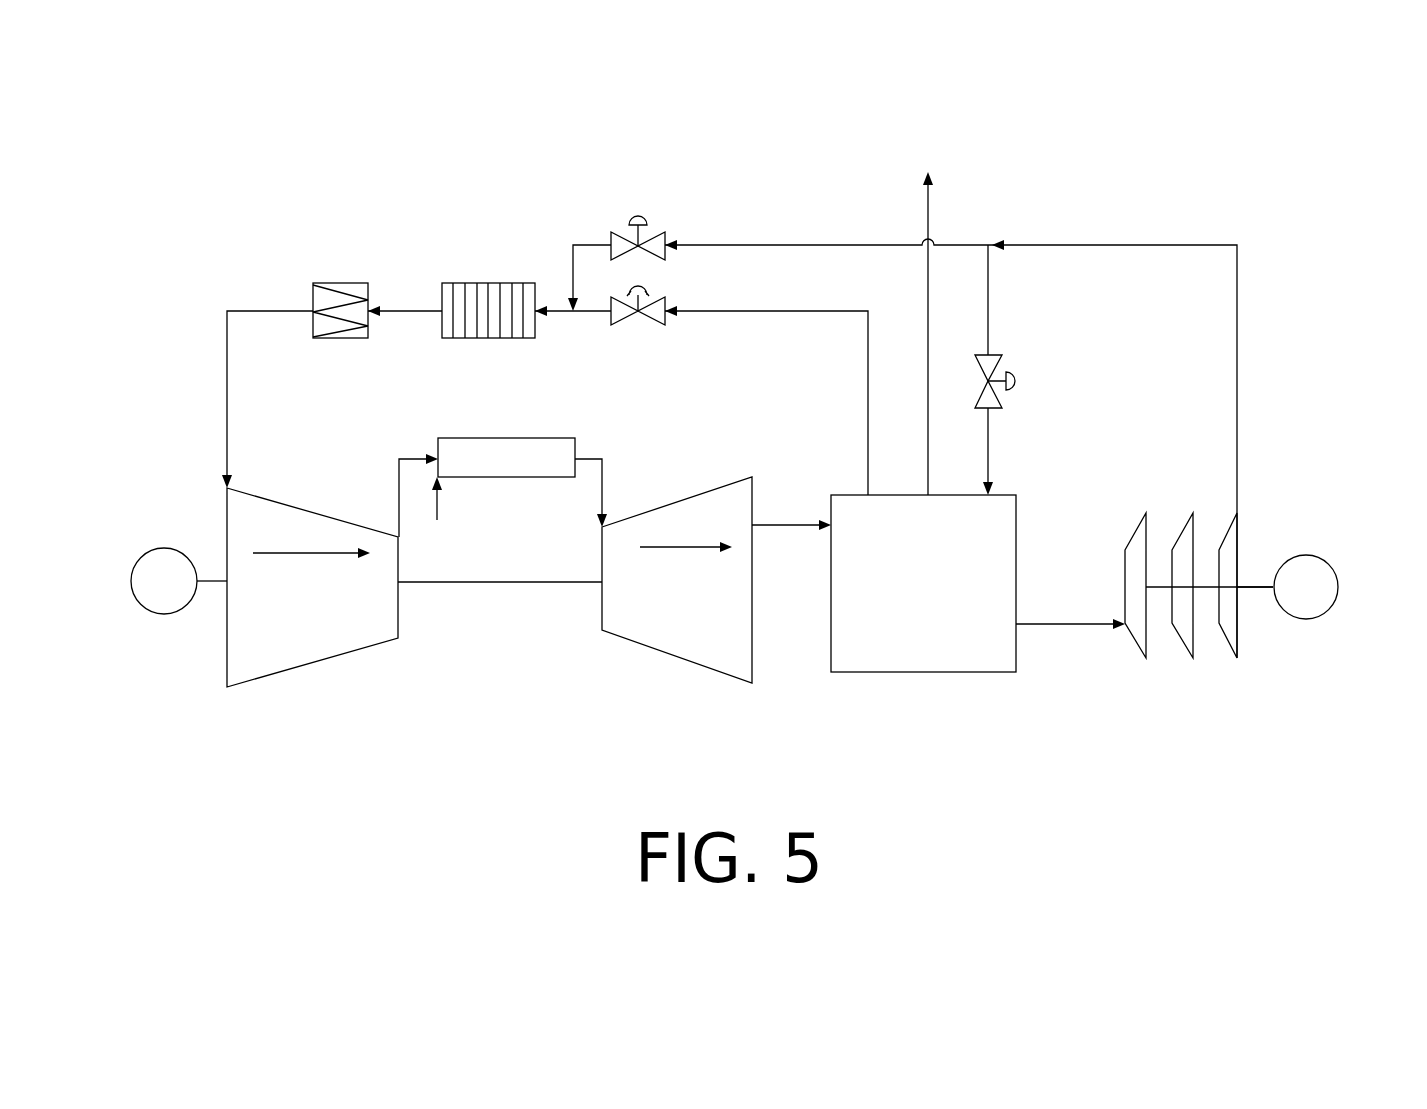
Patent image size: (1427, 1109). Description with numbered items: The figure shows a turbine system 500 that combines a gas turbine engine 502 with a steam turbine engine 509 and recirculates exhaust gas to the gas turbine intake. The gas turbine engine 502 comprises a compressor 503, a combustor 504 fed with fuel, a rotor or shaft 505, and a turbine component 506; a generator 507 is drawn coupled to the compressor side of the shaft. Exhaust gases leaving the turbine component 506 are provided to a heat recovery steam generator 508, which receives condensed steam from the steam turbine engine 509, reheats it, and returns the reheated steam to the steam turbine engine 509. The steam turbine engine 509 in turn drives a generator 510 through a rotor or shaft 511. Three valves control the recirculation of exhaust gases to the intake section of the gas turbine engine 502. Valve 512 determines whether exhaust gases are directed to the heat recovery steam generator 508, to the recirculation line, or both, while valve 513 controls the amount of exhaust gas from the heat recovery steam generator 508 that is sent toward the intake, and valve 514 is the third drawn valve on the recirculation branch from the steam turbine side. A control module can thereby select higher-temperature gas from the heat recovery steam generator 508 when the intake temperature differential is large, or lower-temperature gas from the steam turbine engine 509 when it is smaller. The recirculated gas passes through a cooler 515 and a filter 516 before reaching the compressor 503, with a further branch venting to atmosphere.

The turbine system 500 is at (252, 196).
The gas turbine engine 502 is at (760, 698).
The compressor 503 is at (323, 626).
The combustor 504 is at (453, 438).
The rotor or shaft 505 is at (500, 583).
The turbine component 506 is at (703, 633).
The generator 507 is at (132, 588).
The heat recovery steam generator 508 is at (945, 621).
The steam turbine engine 509 is at (1191, 614).
The generator 510 is at (1338, 587).
The rotor or shaft 511 is at (1258, 585).
The valve 512 is at (1026, 381).
The valve 513 is at (640, 206).
The valve 514 is at (640, 332).
The cooler 515 is at (488, 279).
The filter 516 is at (340, 279).